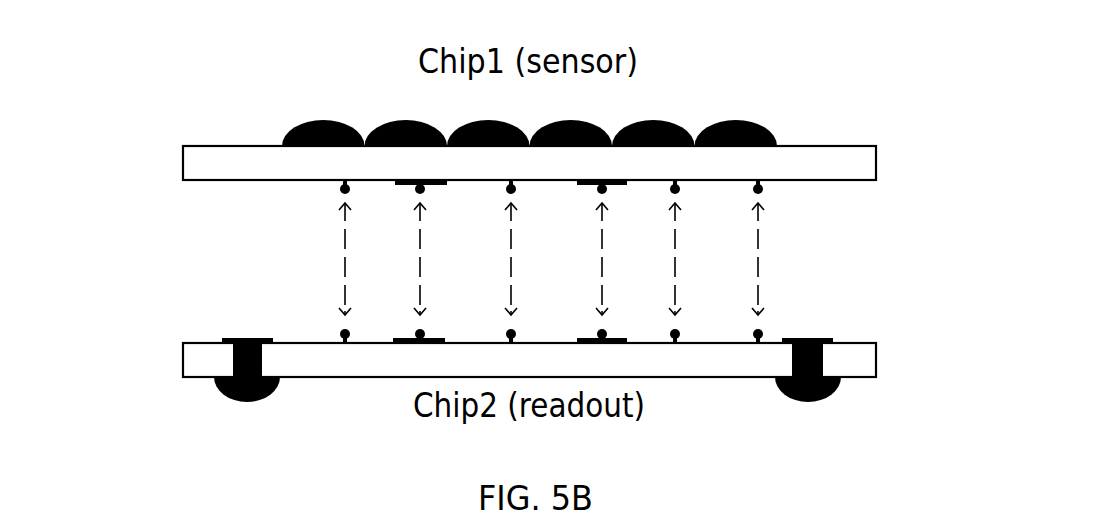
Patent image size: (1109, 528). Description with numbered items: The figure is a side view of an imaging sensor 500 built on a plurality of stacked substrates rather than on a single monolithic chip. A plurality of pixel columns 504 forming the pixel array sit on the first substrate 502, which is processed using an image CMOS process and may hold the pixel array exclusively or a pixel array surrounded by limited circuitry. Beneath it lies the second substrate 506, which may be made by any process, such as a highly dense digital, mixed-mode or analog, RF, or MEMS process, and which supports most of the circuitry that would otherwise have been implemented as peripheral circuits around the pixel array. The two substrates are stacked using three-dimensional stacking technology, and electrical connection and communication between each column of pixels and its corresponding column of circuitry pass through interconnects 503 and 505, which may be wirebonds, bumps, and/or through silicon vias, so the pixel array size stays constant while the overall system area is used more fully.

The imaging sensor 500 is at (148, 132).
The first substrate 502 is at (877, 157).
The interconnects 503 is at (400, 184).
The pixel columns 504 is at (320, 120).
The interconnects 505 is at (405, 343).
The second substrate 506 is at (865, 366).